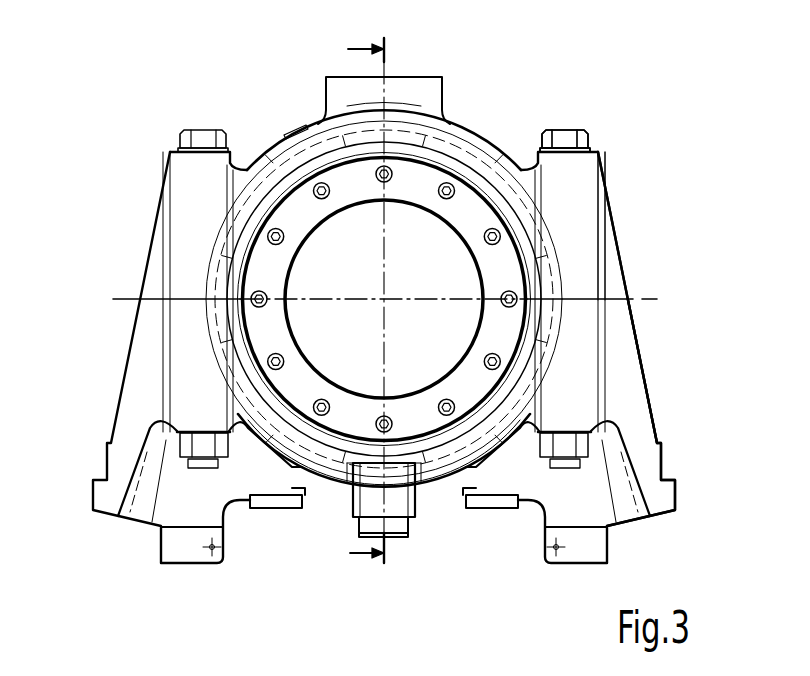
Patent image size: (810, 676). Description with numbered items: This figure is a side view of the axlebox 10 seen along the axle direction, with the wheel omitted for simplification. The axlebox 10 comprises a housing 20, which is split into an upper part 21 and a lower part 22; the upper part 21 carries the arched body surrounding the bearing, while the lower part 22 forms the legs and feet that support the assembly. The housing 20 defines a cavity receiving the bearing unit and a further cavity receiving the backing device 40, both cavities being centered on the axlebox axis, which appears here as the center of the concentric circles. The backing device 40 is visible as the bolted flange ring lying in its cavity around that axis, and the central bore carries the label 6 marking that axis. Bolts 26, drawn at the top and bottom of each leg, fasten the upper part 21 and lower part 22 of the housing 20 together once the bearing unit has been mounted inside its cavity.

The axlebox 10 is at (118, 100).
The bore / shaft axis 6 is at (384, 299).
The housing 20 is at (732, 272).
The upper part 21 is at (617, 293).
The lower part 22 is at (622, 340).
The bolts 26 is at (562, 134).
The backing device 40 is at (268, 330).